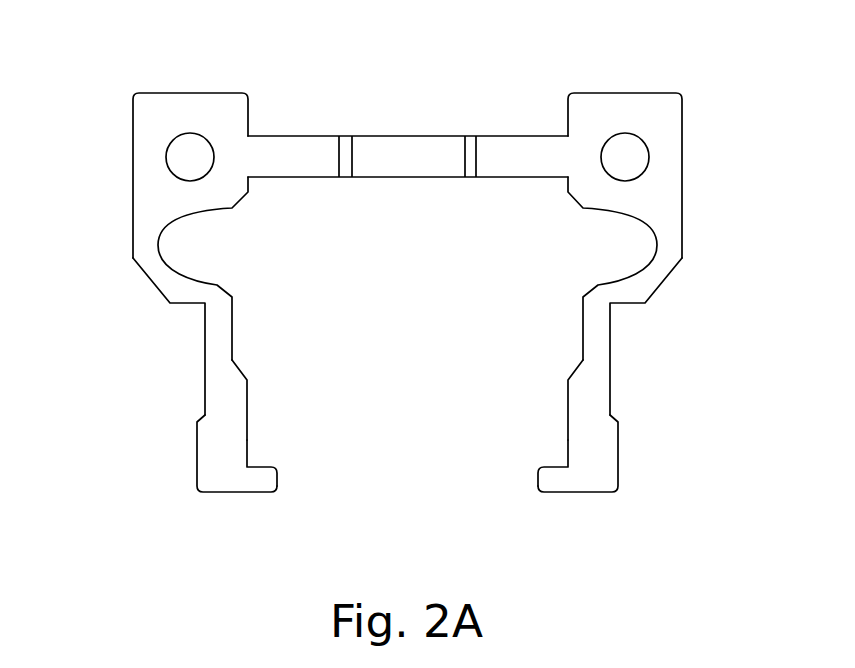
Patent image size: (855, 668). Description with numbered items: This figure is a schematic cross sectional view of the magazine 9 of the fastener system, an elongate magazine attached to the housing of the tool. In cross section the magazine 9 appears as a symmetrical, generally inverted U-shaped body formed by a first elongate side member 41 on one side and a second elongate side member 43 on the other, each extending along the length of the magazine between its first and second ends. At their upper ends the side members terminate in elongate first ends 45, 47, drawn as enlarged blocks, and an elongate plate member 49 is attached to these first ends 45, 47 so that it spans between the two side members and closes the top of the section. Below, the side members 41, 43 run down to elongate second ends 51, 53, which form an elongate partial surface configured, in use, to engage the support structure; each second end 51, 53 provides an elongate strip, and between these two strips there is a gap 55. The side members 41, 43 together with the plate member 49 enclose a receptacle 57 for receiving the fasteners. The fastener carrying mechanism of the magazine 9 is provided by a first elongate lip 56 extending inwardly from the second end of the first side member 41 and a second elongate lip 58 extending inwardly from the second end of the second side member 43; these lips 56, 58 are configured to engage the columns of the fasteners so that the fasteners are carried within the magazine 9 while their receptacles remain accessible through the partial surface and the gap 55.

The magazine 9 is at (122, 153).
The first elongate side member 41 is at (672, 260).
The second elongate side member 43 is at (143, 260).
The elongate first end 45 is at (590, 122).
The elongate first end 47 is at (217, 120).
The elongate plate member 49 is at (303, 157).
The elongate second end 51 is at (593, 492).
The elongate second end 53 is at (238, 492).
The gap 55 is at (314, 510).
The first elongate lip 56 is at (555, 460).
The receptacle 57 is at (402, 329).
The second elongate lip 58 is at (262, 460).